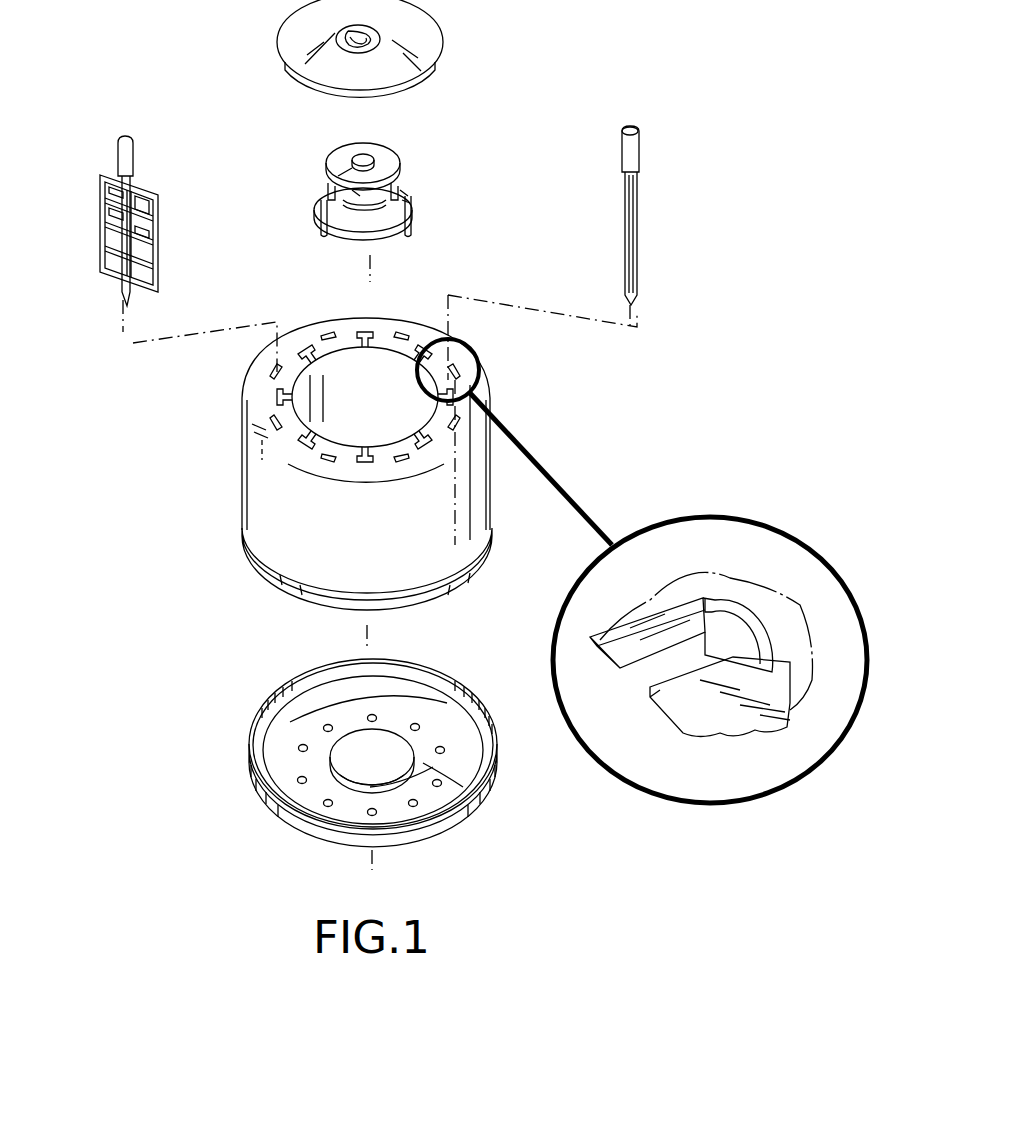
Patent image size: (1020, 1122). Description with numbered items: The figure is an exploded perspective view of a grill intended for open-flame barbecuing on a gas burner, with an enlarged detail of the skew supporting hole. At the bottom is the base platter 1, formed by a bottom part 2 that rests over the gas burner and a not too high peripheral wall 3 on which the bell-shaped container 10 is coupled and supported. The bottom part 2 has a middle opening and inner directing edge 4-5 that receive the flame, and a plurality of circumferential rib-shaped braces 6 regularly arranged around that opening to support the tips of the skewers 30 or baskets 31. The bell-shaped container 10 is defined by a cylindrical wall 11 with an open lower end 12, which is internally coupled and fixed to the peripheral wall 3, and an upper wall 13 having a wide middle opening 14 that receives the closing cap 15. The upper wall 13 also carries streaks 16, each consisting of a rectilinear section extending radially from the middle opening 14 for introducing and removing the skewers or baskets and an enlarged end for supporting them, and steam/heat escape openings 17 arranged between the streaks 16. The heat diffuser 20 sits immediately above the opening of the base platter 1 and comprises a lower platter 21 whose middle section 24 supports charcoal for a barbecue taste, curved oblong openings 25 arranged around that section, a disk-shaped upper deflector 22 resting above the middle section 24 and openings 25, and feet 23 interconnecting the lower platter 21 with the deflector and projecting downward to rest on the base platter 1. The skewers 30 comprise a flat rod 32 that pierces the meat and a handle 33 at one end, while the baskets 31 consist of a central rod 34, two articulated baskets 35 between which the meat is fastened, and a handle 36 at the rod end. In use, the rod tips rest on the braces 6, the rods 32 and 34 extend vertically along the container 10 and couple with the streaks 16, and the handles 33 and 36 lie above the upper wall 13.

The base platter 1 is at (292, 753).
The bottom part 2 is at (288, 719).
The peripheral wall 3 is at (293, 680).
The middle opening and inner directing edge 4-5 is at (328, 747).
The circumferential rib-shaped braces 6 is at (330, 803).
The bell-shaped container 10 is at (426, 484).
The cylindrical wall 11 is at (283, 485).
The open lower end 12 is at (290, 605).
The upper wall 13 is at (260, 373).
The wide middle opening 14 is at (315, 392).
The streaks 16 is at (288, 423).
The steam/heat escape openings 17 is at (290, 432).
The closing cap 15 is at (423, 30).
The heat diffuser 20 is at (431, 186).
The lower platter 21 is at (387, 213).
The upper deflector 22 is at (385, 160).
The feet 23 is at (412, 224).
The middle section 24 is at (395, 183).
The curved oblong openings 25 is at (413, 198).
The skewers 30 is at (686, 215).
The flat rod 32 is at (670, 238).
The handle 33 is at (633, 150).
The vertical baskets 31 is at (190, 221).
The central rod 34 is at (150, 230).
The articulated baskets 35 is at (150, 253).
The handle 36 is at (125, 160).